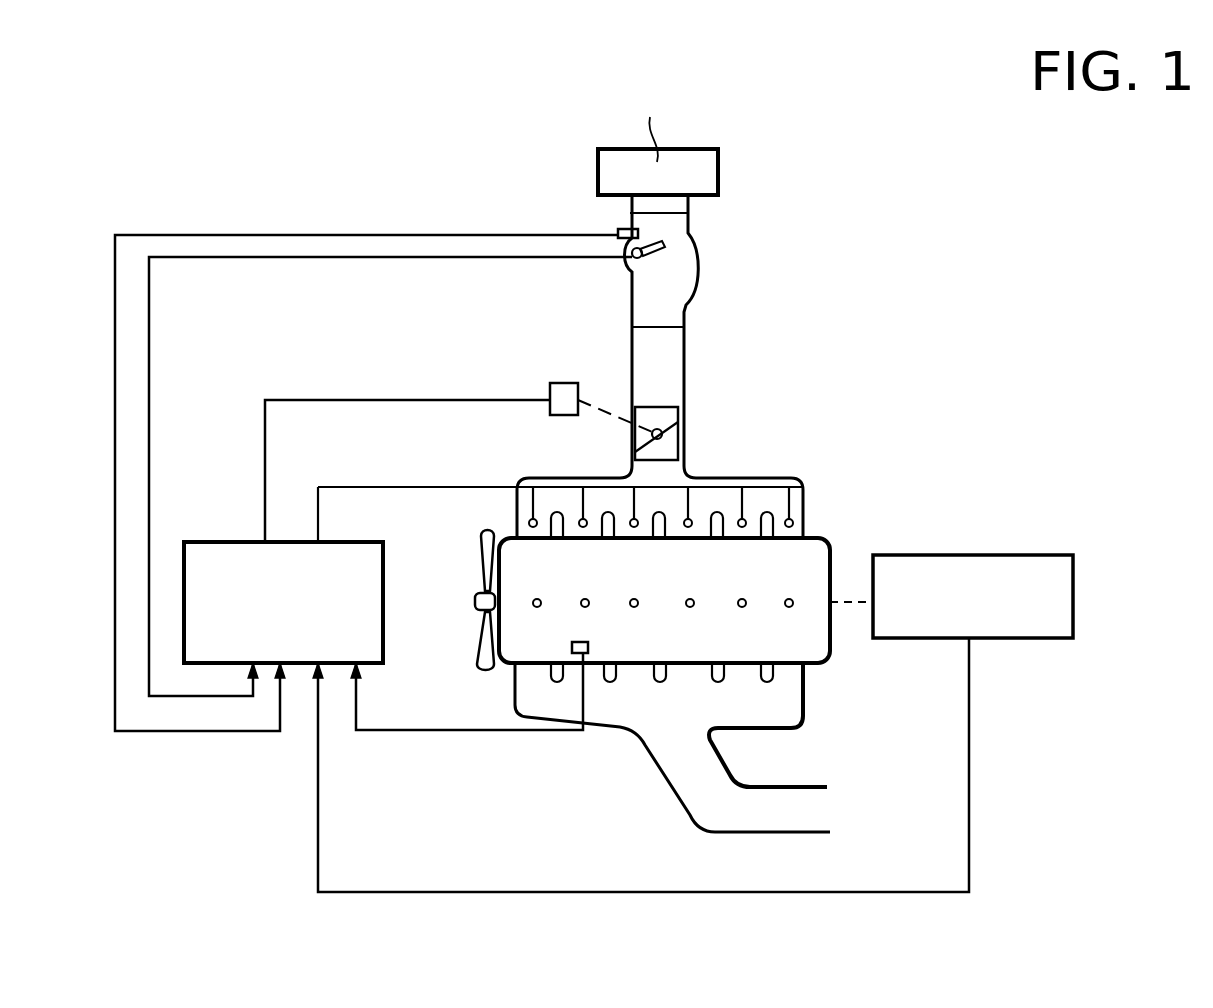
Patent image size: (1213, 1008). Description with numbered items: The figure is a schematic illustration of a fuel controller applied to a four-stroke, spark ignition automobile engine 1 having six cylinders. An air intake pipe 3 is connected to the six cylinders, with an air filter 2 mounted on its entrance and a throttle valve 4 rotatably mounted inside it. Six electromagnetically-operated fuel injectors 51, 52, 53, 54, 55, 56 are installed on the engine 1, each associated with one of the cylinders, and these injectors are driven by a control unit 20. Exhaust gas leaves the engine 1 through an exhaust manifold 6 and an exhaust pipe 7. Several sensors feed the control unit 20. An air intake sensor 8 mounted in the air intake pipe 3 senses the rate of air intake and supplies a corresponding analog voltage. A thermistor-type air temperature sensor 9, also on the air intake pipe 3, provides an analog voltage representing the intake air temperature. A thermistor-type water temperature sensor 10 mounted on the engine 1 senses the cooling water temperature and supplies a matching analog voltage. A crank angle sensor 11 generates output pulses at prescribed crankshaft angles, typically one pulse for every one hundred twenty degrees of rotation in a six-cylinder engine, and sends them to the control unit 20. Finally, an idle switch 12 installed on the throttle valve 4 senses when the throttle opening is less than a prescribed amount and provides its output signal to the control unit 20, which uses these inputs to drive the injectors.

The engine 1 is at (833, 537).
The air filter 2 is at (718, 166).
The air intake pipe 3 is at (684, 357).
The throttle valve 4 is at (676, 434).
The exhaust manifold 6 is at (790, 728).
The exhaust pipe 7 is at (777, 835).
The air intake sensor 8 is at (700, 262).
The air temperature sensor 9 is at (627, 230).
The water temperature sensor 10 is at (572, 645).
The crank angle sensor 11 is at (928, 555).
The idle switch 12 is at (563, 383).
The control unit 20 is at (235, 540).
The fuel injector 51 is at (533, 527).
The fuel injector 52 is at (583, 527).
The fuel injector 53 is at (634, 527).
The fuel injector 54 is at (688, 527).
The fuel injector 55 is at (742, 527).
The fuel injector 56 is at (789, 527).